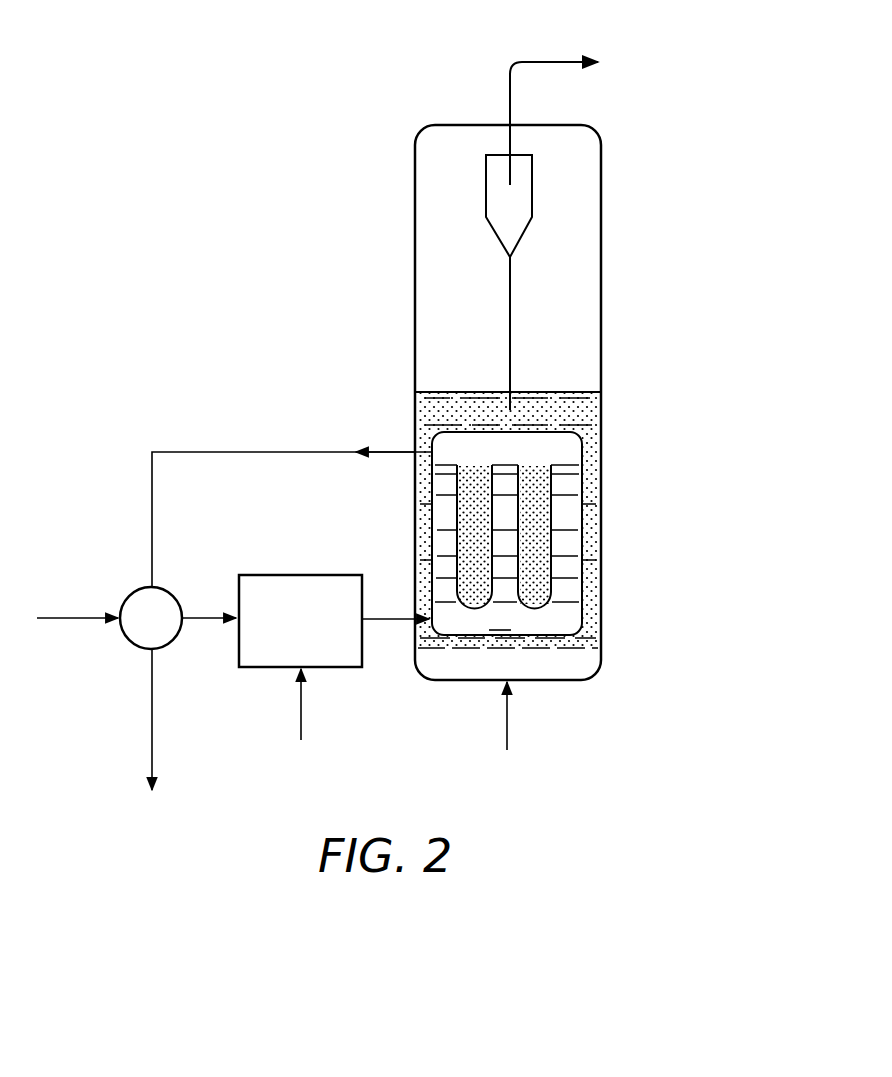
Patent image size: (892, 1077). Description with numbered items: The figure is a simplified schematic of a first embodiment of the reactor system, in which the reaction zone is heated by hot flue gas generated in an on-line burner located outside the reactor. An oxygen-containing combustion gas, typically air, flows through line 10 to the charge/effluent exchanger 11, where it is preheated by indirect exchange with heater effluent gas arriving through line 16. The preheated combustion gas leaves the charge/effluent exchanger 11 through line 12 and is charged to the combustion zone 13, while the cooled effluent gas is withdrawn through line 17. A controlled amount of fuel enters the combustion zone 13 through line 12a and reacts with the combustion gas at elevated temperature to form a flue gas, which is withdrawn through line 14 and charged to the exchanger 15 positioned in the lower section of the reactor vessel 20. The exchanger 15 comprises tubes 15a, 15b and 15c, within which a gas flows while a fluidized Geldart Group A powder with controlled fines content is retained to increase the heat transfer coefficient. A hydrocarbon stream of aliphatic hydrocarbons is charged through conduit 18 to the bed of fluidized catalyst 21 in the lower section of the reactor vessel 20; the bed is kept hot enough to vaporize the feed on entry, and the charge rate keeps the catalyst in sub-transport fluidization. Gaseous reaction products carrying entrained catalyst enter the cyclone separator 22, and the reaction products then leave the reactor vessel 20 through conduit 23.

The line 10 is at (60, 618).
The charge/effluent exchanger 11 is at (162, 630).
The line 12 is at (195, 618).
The line 12a is at (301, 707).
The combustion zone 13 is at (310, 627).
The line 14 is at (388, 620).
The exchanger 15 is at (507, 533).
The tube 15a is at (442, 542).
The tube 15b is at (505, 528).
The tube 15c is at (568, 540).
The line 16 is at (280, 452).
The line 17 is at (152, 728).
The conduit 18 is at (507, 720).
The reactor vessel 20 is at (601, 340).
The bed of fluidized catalyst 21 is at (601, 505).
The cyclone separator 22 is at (520, 215).
The conduit 23 is at (540, 62).